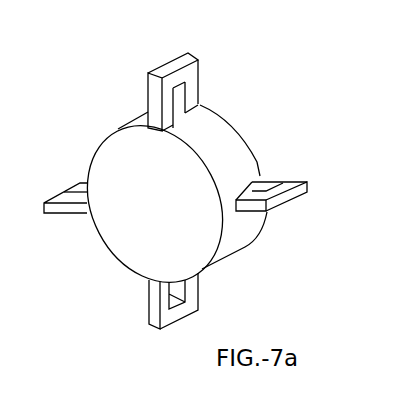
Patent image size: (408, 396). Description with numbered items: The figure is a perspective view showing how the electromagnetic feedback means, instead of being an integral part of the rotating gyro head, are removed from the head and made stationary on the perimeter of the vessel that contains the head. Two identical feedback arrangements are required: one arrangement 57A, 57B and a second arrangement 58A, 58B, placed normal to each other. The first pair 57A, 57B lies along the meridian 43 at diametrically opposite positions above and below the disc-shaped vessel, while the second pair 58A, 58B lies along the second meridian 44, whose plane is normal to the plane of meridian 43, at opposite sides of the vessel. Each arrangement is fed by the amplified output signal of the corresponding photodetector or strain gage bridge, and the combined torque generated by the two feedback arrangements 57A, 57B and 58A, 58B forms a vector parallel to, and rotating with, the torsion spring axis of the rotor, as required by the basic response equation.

The meridian 43 is at (176, 356).
The second meridian 44 is at (22, 190).
The feedback arrangement 57A is at (198, 90).
The feedback arrangement 57B is at (196, 296).
The feedback arrangement 58A is at (63, 212).
The feedback arrangement 58B is at (277, 205).